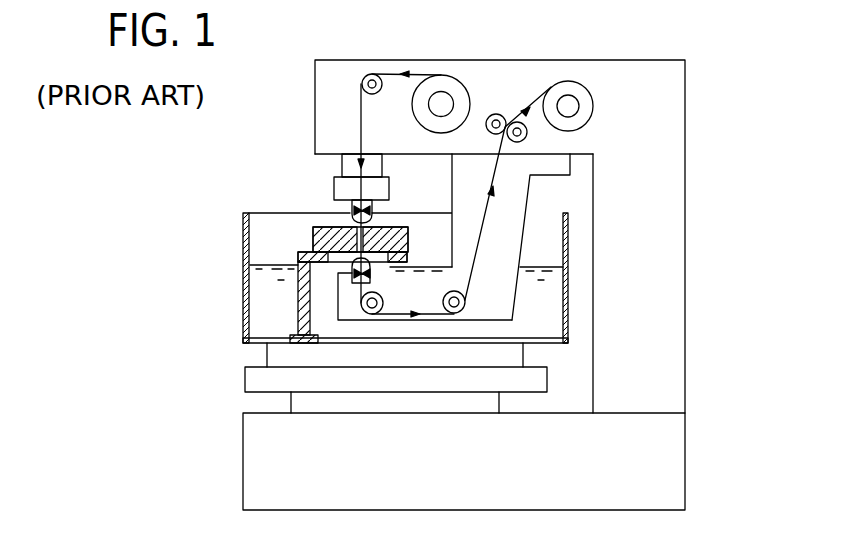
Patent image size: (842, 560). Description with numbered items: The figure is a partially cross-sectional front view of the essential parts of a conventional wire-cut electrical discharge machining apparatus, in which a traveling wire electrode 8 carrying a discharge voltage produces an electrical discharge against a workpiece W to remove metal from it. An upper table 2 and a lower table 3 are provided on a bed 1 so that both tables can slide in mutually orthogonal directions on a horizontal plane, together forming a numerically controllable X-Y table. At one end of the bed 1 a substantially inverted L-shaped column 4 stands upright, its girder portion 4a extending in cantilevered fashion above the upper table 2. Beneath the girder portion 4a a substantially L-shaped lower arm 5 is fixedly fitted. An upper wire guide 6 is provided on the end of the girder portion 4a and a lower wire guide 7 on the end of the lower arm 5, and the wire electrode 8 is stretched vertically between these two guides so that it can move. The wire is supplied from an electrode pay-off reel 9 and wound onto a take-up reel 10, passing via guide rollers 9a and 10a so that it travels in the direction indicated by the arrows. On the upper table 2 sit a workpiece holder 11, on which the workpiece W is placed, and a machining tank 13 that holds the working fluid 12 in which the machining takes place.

The bed 1 is at (250, 486).
The upper table 2 is at (280, 351).
The lower table 3 is at (256, 379).
The column 4 is at (668, 253).
The girder portion 4a is at (521, 75).
The lower arm 5 is at (517, 205).
The upper wire guide 6 is at (352, 211).
The lower wire guide 7 is at (343, 275).
The wire electrode 8 is at (361, 117).
The electrode pay-off reel 9 is at (441, 78).
The guide roller 9a is at (370, 74).
The take-up reel 10 is at (567, 82).
The guide roller 10a is at (372, 314).
The workpiece holder 11 is at (300, 252).
The working fluid 12 is at (282, 270).
The machining tank 13 is at (246, 293).
The workpiece W is at (313, 232).